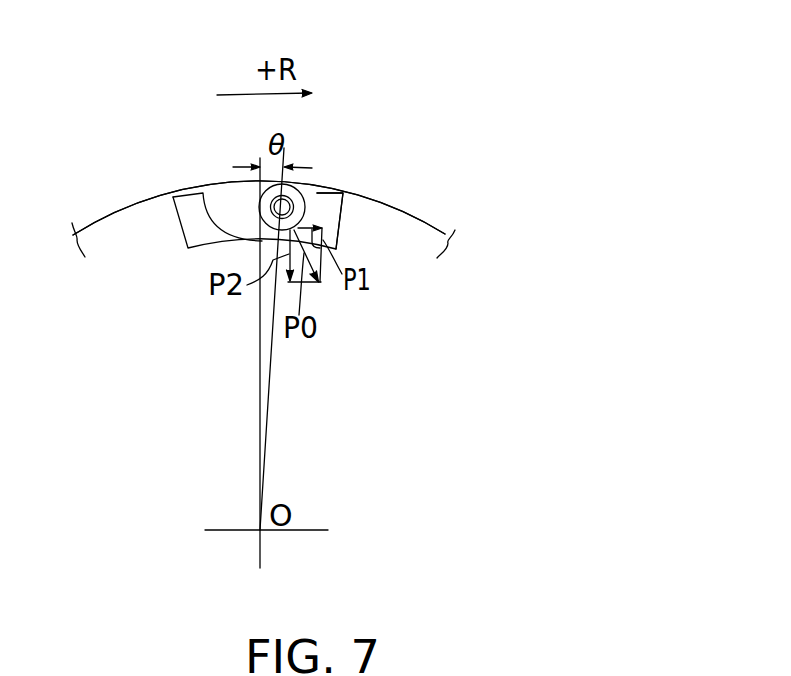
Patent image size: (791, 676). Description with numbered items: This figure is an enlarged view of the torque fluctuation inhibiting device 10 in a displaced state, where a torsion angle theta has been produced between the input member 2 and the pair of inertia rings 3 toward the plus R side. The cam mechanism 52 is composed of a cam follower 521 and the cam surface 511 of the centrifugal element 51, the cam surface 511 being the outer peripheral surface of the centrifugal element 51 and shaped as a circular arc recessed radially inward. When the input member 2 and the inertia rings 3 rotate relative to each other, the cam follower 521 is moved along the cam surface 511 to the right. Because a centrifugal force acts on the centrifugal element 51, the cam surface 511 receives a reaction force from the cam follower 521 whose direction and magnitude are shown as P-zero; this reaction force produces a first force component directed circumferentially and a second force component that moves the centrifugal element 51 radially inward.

The rotation mechanism 10 is at (506, 116).
The input member 2 is at (424, 237).
The inertia rings 3 is at (193, 188).
The cam mechanism 52 is at (240, 210).
The centrifugal element 51 is at (325, 206).
The cam surface 511 is at (303, 194).
The cam follower 521 is at (288, 184).